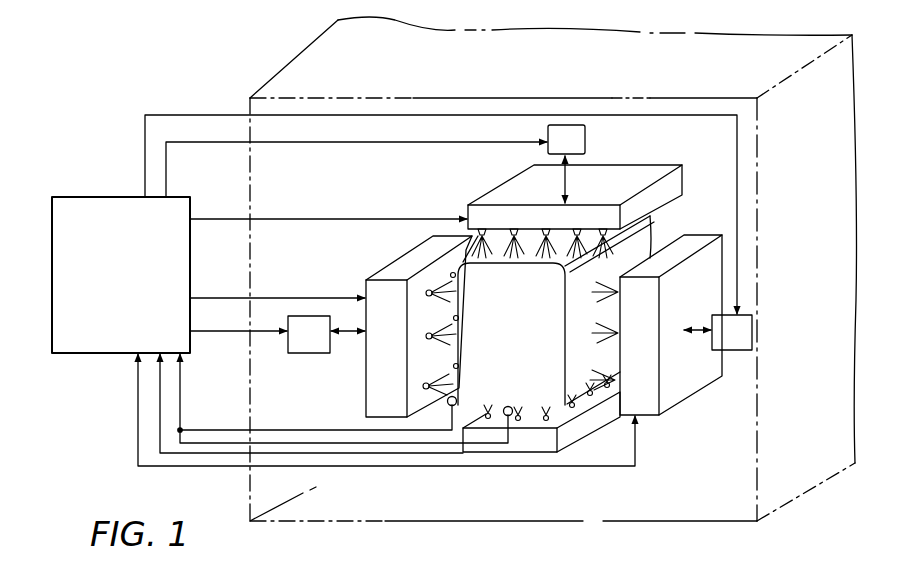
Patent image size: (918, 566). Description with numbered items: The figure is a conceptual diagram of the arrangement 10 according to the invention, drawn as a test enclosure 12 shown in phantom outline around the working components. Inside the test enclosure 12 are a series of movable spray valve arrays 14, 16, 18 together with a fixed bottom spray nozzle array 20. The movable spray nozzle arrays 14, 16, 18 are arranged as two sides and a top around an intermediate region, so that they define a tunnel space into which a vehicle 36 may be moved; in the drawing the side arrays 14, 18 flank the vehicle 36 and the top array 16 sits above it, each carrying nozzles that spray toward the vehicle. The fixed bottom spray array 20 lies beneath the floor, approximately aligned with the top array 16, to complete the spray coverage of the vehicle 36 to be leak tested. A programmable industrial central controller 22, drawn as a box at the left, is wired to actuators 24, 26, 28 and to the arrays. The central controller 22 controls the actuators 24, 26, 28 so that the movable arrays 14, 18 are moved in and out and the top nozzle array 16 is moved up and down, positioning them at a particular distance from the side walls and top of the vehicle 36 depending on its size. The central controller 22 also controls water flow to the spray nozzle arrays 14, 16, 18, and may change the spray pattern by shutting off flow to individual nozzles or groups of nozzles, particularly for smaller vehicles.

The arrangement 10 is at (184, 92).
The test enclosure 12 is at (330, 48).
The movable spray valve array 14 is at (402, 260).
The top spray nozzle array 16 is at (612, 172).
The movable spray valve array 18 is at (668, 392).
The fixed bottom spray nozzle array 20 is at (573, 438).
The programmable industrial central controller 22 is at (97, 194).
The actuator 24 is at (324, 356).
The actuator 26 is at (562, 122).
The actuator 28 is at (740, 356).
The vehicle 36 is at (527, 328).